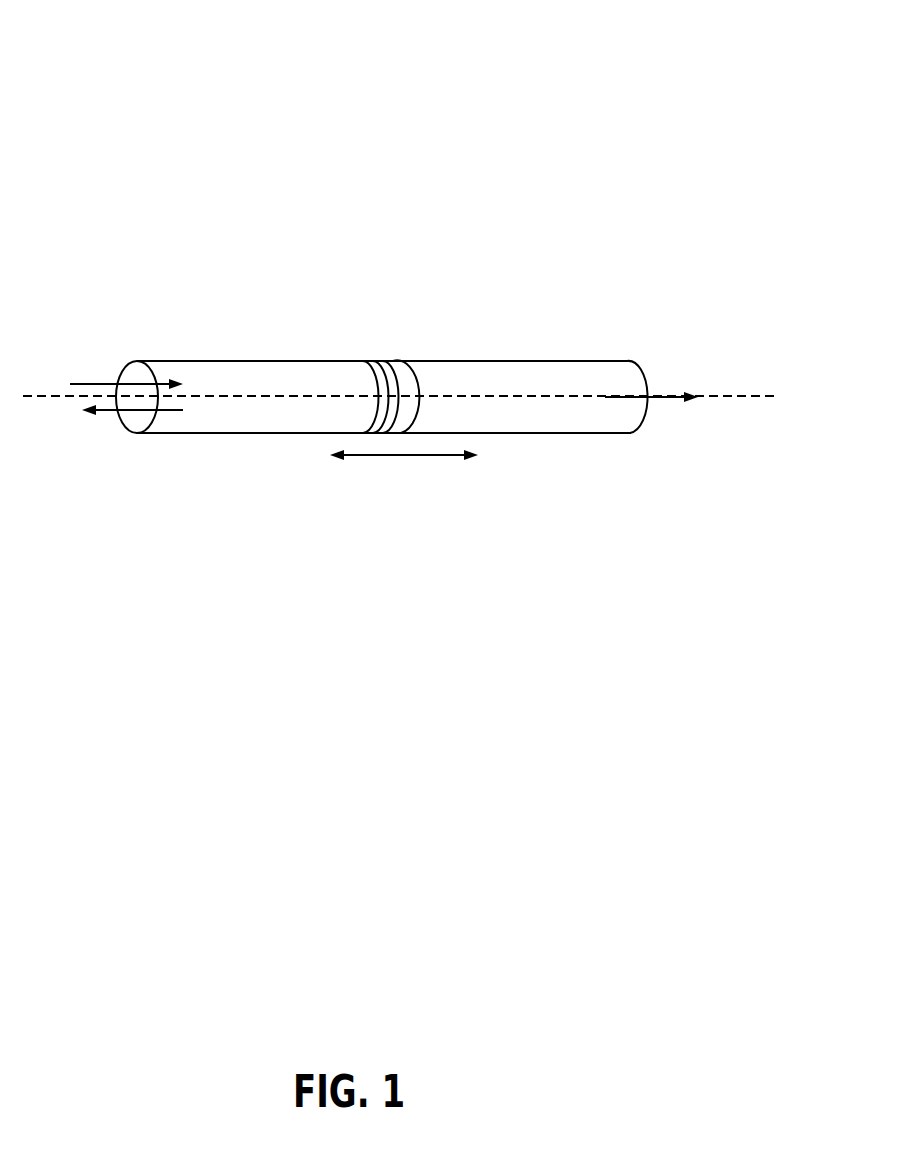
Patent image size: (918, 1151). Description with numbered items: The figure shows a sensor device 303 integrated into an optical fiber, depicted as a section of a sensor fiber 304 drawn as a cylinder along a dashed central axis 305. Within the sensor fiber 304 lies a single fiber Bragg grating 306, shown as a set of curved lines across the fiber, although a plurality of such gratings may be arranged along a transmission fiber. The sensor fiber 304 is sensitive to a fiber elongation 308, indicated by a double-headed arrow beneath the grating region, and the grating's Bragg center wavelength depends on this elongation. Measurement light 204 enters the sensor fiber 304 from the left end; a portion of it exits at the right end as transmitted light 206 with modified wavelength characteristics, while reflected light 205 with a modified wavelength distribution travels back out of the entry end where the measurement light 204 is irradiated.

The sensor device 303 is at (662, 34).
The sensor fiber 304 is at (248, 376).
The optical axis 305 is at (735, 397).
The fiber Bragg grating 306 is at (403, 361).
The fiber elongation 308 is at (413, 454).
The measurement light 204 is at (102, 383).
The reflected light 205 is at (107, 412).
The transmitted light 206 is at (658, 393).